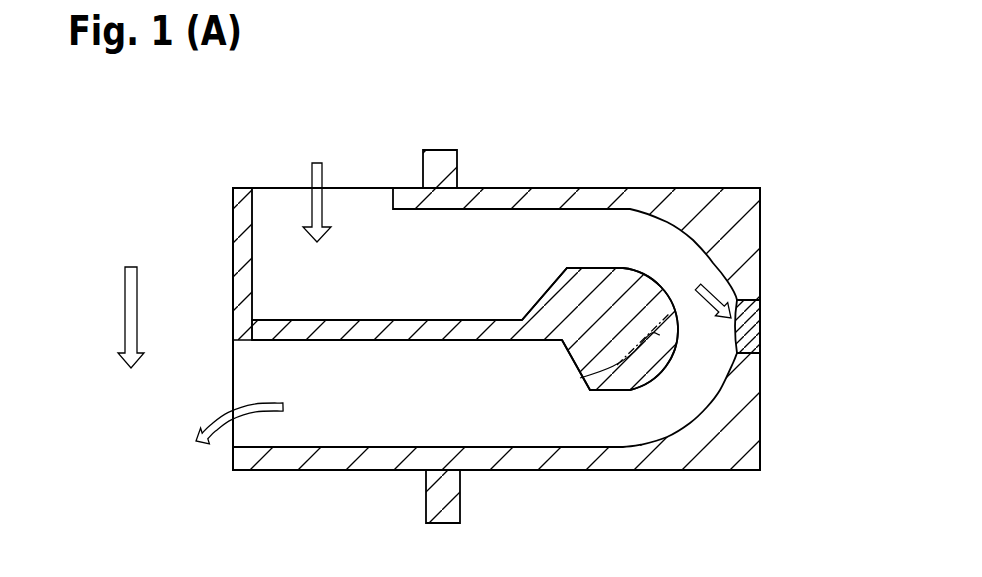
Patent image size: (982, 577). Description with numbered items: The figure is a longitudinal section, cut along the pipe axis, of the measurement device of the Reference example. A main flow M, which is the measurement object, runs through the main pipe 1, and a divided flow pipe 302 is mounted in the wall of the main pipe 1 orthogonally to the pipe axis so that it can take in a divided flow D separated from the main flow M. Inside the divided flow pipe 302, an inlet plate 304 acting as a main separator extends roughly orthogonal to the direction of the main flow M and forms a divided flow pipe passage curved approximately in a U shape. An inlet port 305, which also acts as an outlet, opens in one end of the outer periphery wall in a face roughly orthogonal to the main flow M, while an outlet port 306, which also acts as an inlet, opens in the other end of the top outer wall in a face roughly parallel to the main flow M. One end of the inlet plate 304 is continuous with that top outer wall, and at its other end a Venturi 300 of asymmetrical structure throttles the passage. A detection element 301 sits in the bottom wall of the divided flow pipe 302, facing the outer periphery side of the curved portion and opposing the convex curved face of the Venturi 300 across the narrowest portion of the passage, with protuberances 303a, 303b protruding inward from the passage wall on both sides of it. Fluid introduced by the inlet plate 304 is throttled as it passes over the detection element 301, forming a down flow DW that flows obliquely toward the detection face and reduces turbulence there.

The main pipe 1 is at (450, 510).
The Venturi 300 is at (590, 382).
The detection element 301 is at (762, 325).
The divided flow pipe 302 is at (494, 169).
The protuberance 303a is at (710, 247).
The protuberance 303b is at (720, 395).
The inlet plate 304 is at (383, 320).
The inlet port 305 is at (288, 188).
The outlet port 306 is at (240, 378).
The divided flow D is at (322, 172).
The main flow M is at (138, 308).
The down flow DW is at (698, 287).